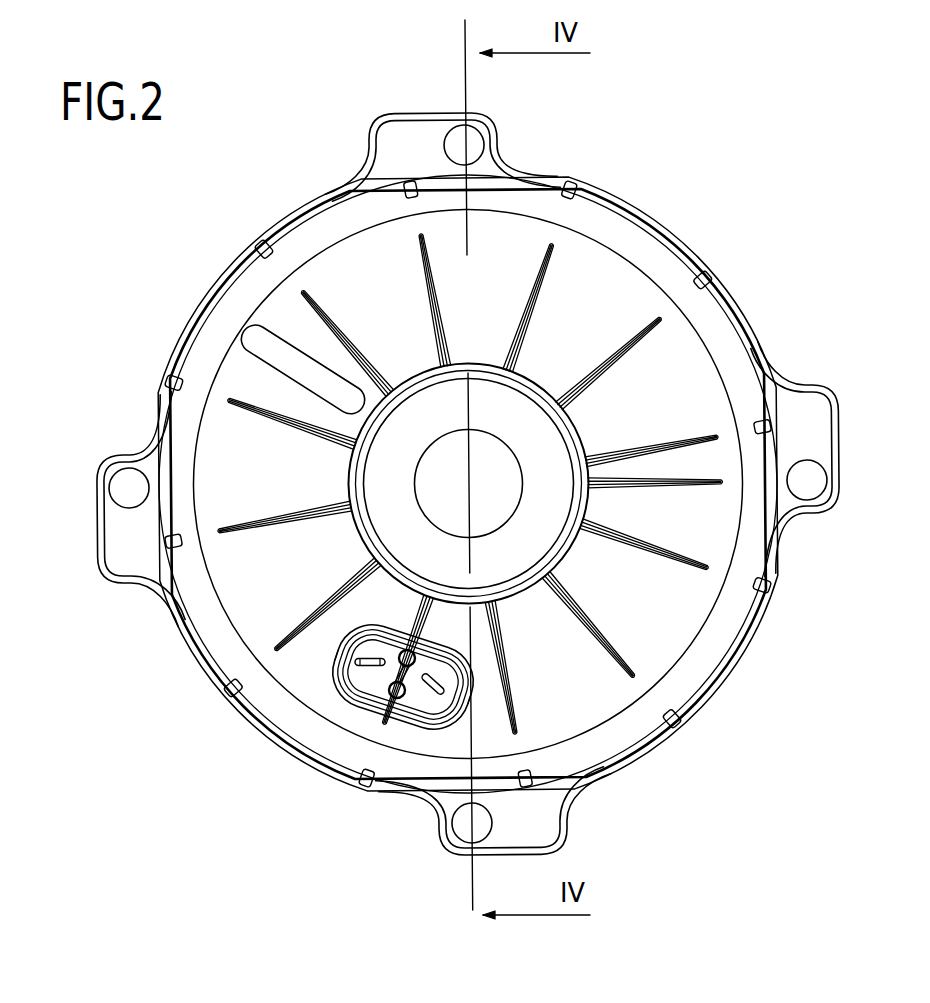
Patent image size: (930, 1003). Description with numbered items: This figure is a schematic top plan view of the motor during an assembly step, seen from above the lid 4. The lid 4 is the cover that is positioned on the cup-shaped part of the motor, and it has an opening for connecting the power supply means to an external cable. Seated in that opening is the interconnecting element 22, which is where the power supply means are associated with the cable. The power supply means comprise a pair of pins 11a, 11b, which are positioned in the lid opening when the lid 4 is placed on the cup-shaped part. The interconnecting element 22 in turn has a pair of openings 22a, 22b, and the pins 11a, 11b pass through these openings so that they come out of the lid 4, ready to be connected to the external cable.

The lid 4 is at (468, 465).
The interconnecting element 22 is at (312, 717).
The opening 22a is at (195, 620).
The opening 22b is at (597, 733).
The pin 11a is at (218, 683).
The pin 11b is at (400, 787).